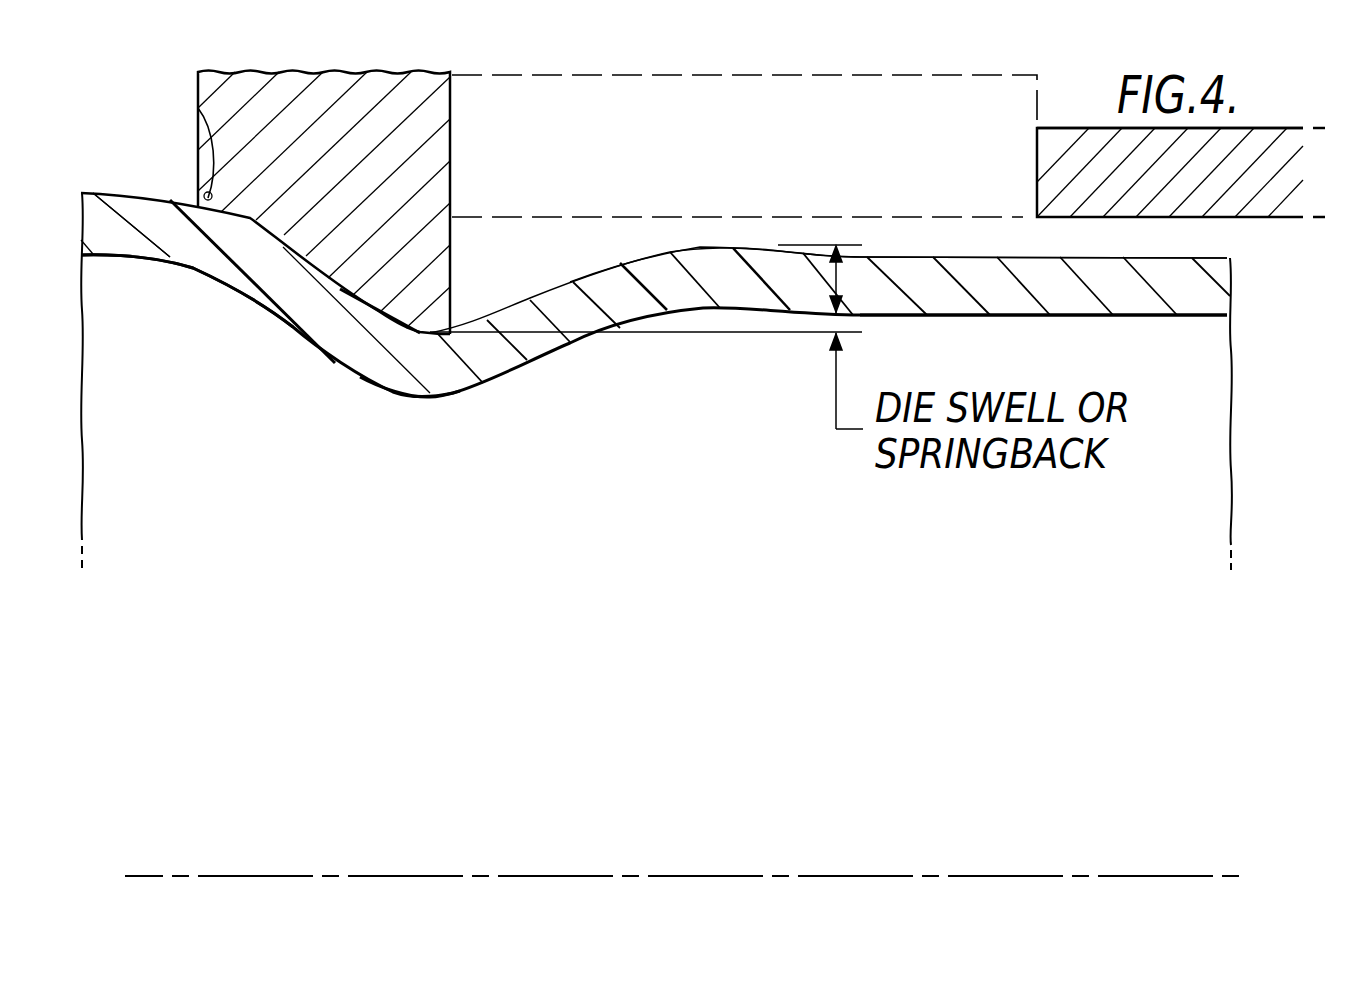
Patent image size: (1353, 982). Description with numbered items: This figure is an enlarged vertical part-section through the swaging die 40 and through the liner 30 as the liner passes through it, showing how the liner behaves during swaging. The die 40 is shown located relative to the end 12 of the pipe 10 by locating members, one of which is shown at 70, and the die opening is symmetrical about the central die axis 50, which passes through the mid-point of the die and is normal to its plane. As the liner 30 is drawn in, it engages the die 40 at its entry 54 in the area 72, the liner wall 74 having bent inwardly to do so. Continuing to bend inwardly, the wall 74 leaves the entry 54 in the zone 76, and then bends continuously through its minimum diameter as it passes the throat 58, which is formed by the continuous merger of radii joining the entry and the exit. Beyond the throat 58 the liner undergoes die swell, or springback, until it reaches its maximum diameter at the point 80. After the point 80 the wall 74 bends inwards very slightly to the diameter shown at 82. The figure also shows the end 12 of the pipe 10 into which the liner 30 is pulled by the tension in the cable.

The pipe 10 is at (1256, 123).
The end of the pipe 12 is at (1062, 150).
The liner 30 is at (112, 178).
The swaging die 40 is at (407, 135).
The central die axis 50 is at (378, 876).
The entry 54 is at (198, 110).
The throat 58 is at (430, 394).
The locating member 70 is at (603, 175).
The area of engagement 72 is at (272, 250).
The liner wall 74 is at (193, 256).
The zone 76 is at (360, 335).
The point of maximum diameter 80 is at (707, 238).
The final diameter 82 is at (962, 247).